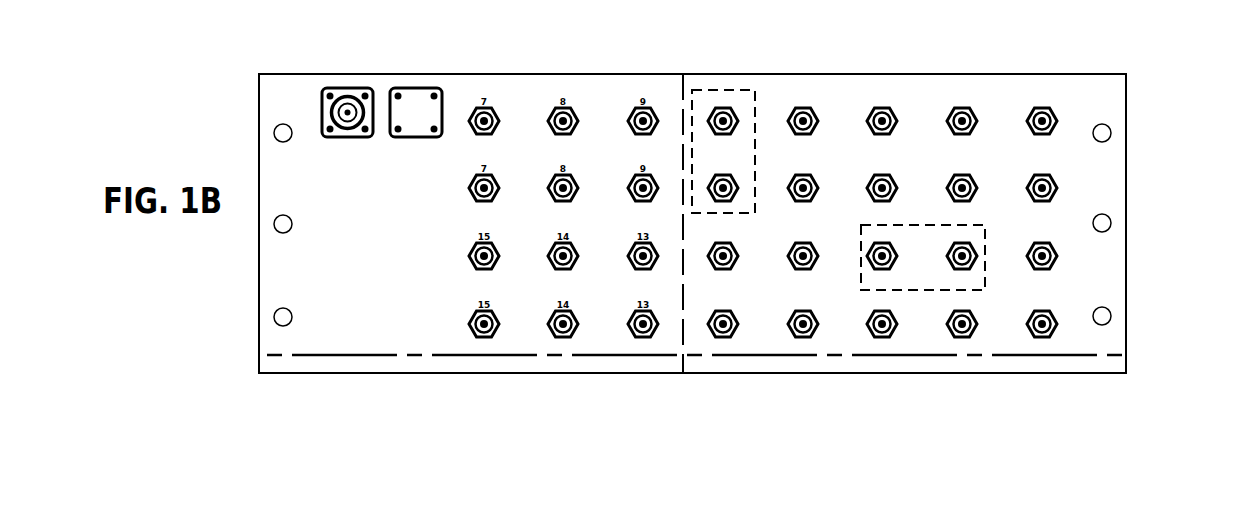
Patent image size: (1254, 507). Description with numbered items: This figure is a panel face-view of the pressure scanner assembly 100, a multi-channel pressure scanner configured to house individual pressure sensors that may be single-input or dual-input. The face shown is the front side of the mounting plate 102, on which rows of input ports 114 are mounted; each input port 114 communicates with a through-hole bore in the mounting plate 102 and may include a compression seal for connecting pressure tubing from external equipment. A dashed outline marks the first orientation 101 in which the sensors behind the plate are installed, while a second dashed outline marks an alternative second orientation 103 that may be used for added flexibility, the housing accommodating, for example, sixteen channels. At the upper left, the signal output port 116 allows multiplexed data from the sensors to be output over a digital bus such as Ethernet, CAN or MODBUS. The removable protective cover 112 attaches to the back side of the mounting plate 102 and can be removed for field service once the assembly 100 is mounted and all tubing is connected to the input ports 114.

The pressure scanner assembly 100 is at (749, 50).
The first orientation 101 is at (706, 90).
The mounting plate 102 is at (921, 138).
The second orientation 103 is at (984, 258).
The protective cover 112 is at (1127, 185).
The input port 114 is at (806, 106).
The signal output port 116 is at (340, 88).